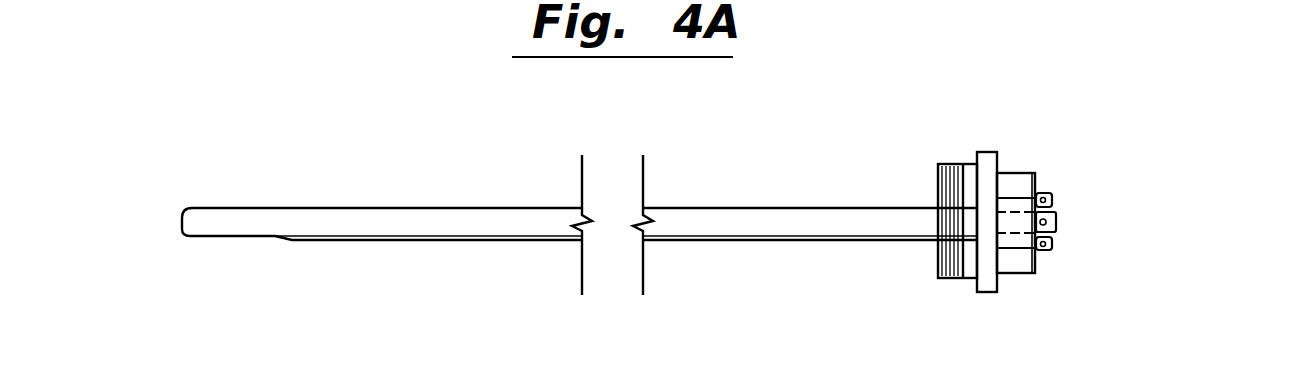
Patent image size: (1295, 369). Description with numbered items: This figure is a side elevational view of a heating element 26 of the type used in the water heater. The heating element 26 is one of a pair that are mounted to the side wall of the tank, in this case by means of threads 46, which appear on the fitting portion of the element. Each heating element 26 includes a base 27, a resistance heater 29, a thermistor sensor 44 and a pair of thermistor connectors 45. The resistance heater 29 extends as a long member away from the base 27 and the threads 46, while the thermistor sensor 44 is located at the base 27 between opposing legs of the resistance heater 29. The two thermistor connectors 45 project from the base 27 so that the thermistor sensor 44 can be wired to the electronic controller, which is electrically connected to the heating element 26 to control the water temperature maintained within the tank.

The heating element 26 is at (325, 178).
The resistance heater 29 is at (748, 206).
The threads 46 is at (942, 164).
The thermistor sensor 44 is at (1008, 210).
The thermistor connectors 45 is at (1062, 238).
The base 27 is at (1015, 275).